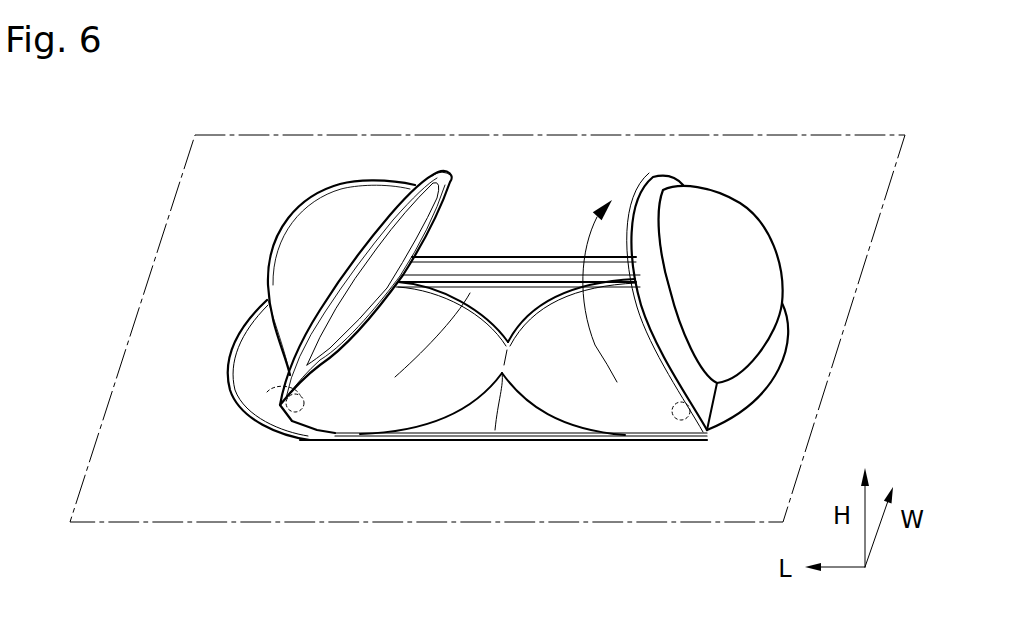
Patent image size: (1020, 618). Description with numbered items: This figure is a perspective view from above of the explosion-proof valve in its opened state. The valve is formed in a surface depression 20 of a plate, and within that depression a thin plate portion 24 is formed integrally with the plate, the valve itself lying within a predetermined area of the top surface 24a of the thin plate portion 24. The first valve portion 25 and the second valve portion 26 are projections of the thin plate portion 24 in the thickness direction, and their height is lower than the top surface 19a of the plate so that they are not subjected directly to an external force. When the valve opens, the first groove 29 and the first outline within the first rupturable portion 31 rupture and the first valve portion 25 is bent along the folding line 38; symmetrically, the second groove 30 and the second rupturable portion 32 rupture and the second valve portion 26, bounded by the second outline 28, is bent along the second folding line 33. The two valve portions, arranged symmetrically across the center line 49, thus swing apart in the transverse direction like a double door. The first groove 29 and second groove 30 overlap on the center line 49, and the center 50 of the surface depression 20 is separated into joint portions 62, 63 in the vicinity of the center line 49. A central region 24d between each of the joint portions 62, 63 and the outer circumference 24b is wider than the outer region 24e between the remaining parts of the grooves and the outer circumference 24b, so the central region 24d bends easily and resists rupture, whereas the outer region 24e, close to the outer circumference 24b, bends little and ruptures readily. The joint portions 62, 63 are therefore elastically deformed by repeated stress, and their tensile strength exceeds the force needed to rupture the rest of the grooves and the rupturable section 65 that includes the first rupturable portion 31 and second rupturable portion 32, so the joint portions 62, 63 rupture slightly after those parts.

The top surface of the plate 19a is at (208, 208).
The surface depression 20 is at (218, 321).
The thin plate portion 24 is at (261, 333).
The top surface of the thin plate portion 24a is at (477, 422).
The outer circumference 24b is at (520, 255).
The central region 24d is at (492, 320).
The outer region 24e is at (405, 280).
The first valve portion 25 is at (268, 211).
The second valve portion 26 is at (762, 220).
The second outline 28 is at (668, 272).
The first groove 29 is at (368, 441).
The second groove 30 is at (554, 328).
The first rupturable portion 31 is at (247, 373).
The second rupturable portion 32 is at (790, 359).
The second folding line 33 is at (708, 425).
The folding line 38 is at (267, 392).
The center line 49 is at (495, 430).
The center 50 is at (506, 357).
The joint portion 62 is at (440, 172).
The joint portion 63 is at (655, 180).
The rupturable section 65 is at (295, 441).